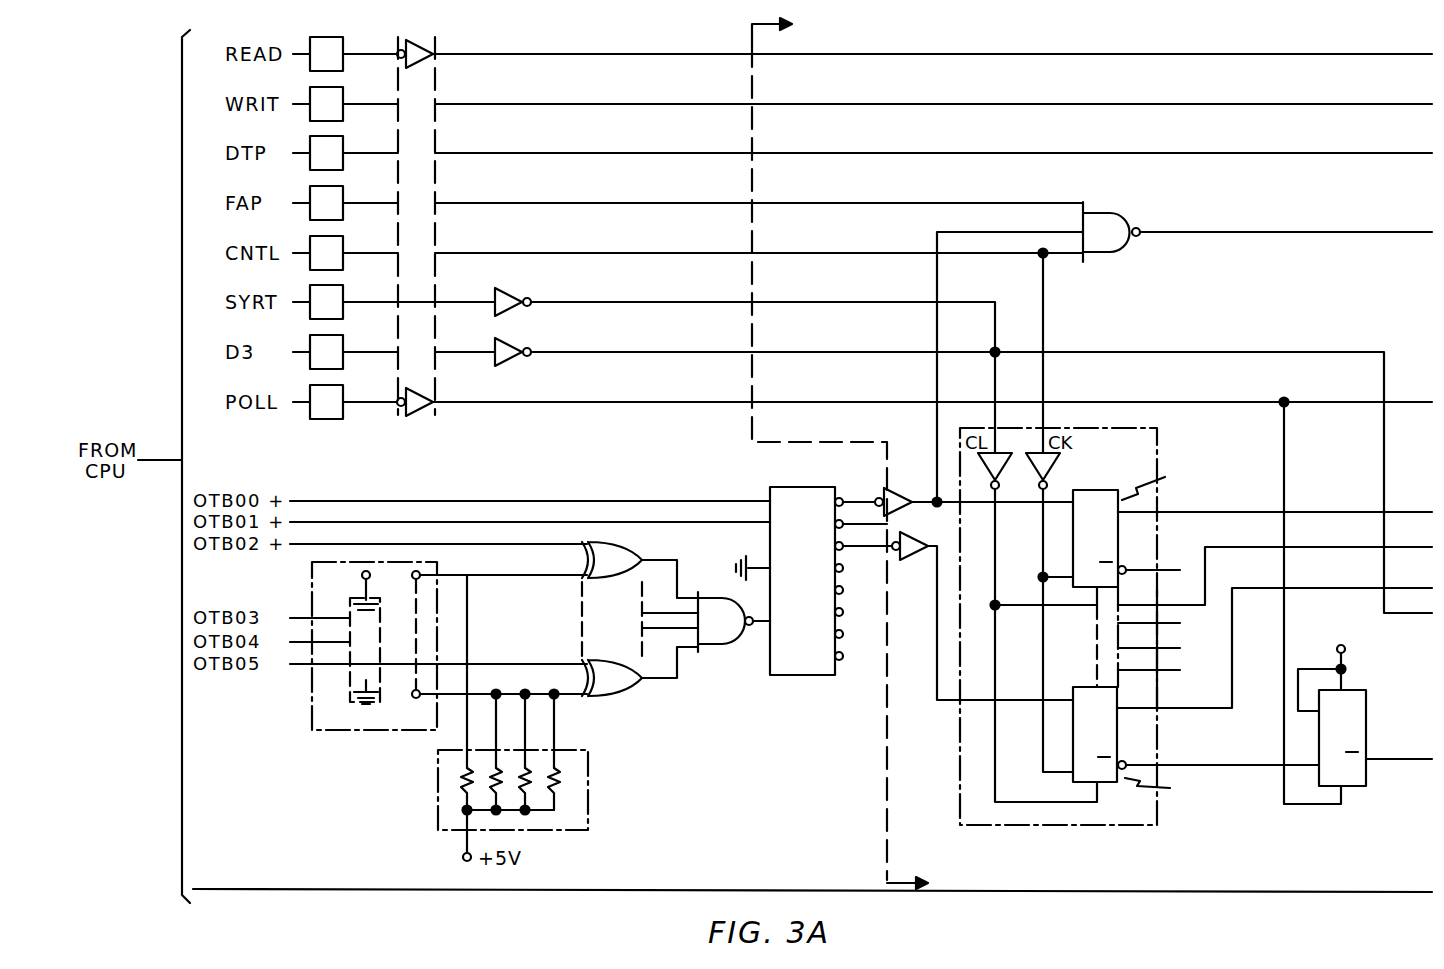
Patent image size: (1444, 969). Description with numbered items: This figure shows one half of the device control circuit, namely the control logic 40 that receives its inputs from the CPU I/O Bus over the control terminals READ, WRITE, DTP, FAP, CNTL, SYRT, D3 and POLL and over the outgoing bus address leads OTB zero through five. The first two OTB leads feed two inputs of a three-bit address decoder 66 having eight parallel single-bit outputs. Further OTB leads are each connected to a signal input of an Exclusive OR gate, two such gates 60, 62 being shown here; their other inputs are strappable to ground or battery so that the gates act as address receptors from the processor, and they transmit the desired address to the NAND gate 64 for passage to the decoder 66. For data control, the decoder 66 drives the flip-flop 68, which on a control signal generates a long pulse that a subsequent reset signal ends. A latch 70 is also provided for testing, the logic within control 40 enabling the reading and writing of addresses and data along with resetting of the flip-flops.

The control logic 40 is at (888, 733).
The Exclusive OR gate 60 is at (630, 548).
The Exclusive OR gate 62 is at (625, 698).
The NAND gate 64 is at (715, 638).
The decoder 66 is at (800, 487).
The flip-flop 68 is at (1109, 786).
The latch 70 is at (1100, 490).